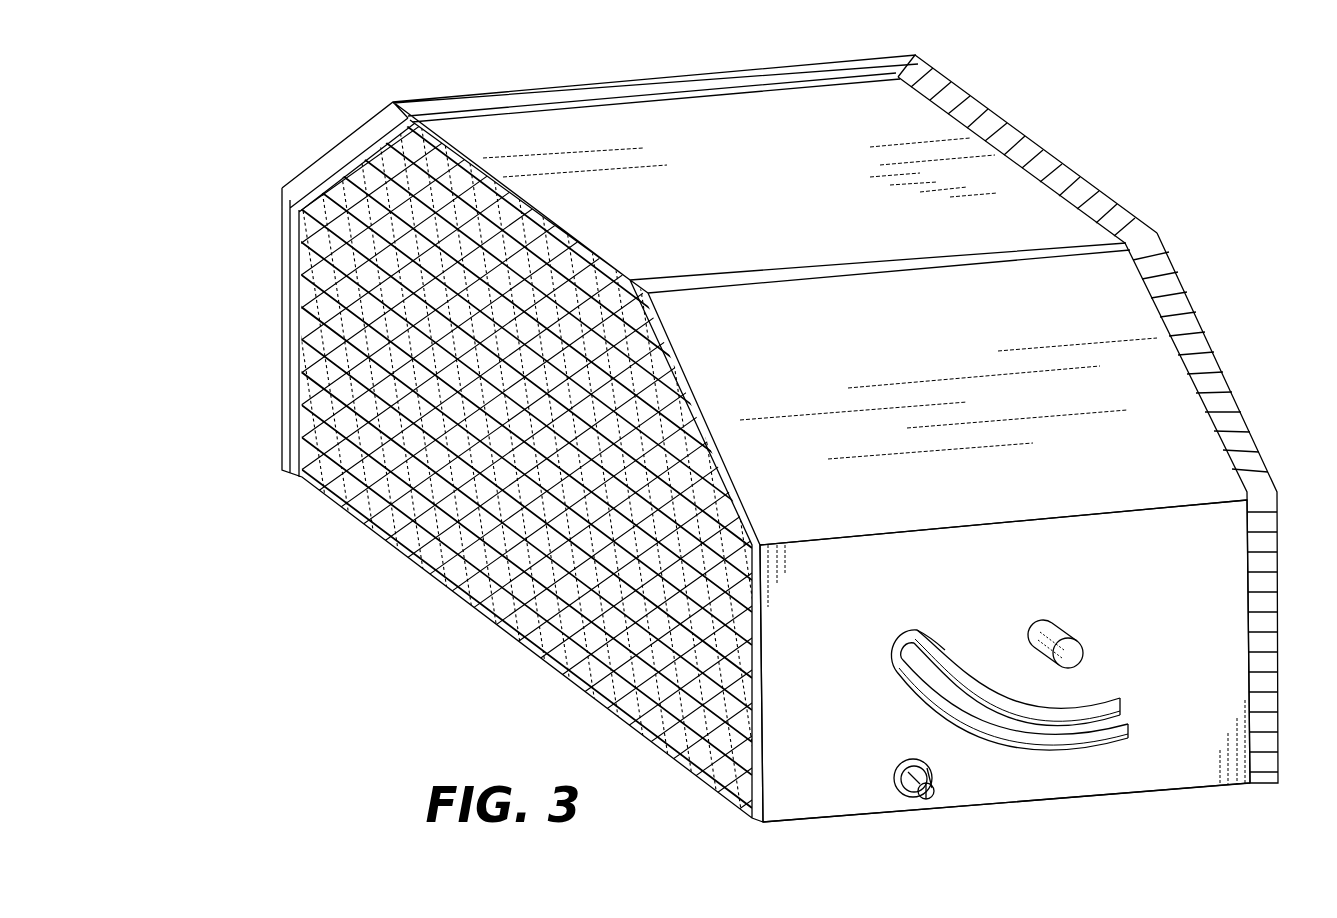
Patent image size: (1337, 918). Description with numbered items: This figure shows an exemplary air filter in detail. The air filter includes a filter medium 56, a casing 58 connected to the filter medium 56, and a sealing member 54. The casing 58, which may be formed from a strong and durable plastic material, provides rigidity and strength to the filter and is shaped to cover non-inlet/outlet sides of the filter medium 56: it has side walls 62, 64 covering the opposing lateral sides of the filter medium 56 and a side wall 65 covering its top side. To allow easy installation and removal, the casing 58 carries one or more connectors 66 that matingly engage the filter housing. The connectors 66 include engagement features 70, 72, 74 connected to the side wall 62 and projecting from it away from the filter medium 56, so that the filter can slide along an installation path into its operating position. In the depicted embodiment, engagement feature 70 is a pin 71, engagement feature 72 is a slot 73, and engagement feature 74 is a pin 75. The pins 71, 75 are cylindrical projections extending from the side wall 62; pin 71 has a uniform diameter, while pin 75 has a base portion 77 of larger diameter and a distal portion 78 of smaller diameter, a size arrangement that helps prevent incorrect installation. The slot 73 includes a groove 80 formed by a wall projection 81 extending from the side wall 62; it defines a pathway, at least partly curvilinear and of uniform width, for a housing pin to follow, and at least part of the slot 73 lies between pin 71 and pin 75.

The sealing member 54 is at (1210, 390).
The filter medium 56 is at (462, 537).
The casing 58 is at (917, 55).
The side wall 62 is at (1185, 586).
The side wall 64 is at (283, 387).
The side wall 65 is at (740, 199).
The connectors 66 is at (861, 619).
The engagement feature 70 is at (1027, 624).
The pin 71 is at (1055, 623).
The engagement feature 72 is at (900, 680).
The slot 73 is at (920, 628).
The engagement feature 74 is at (934, 778).
The pin 75 is at (897, 777).
The base portion 77 is at (898, 780).
The distal portion 78 is at (930, 790).
The groove 80 is at (1102, 718).
The wall projection 81 is at (1085, 742).